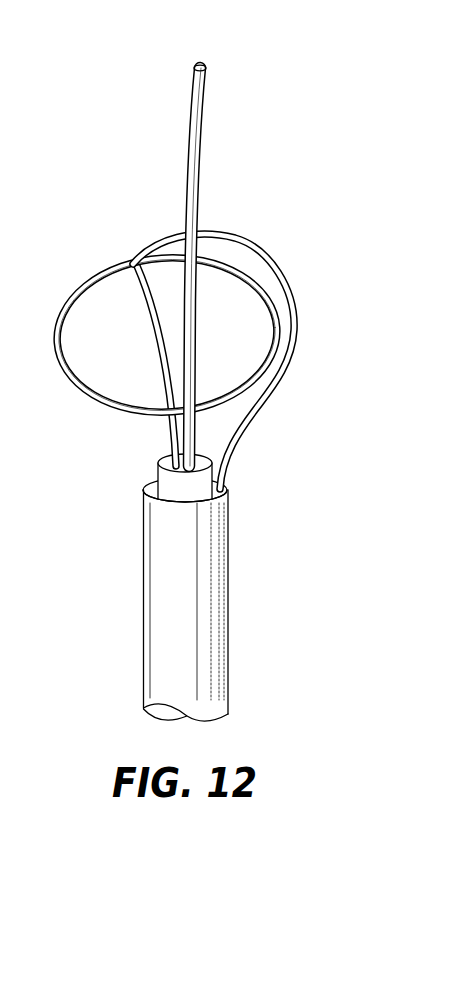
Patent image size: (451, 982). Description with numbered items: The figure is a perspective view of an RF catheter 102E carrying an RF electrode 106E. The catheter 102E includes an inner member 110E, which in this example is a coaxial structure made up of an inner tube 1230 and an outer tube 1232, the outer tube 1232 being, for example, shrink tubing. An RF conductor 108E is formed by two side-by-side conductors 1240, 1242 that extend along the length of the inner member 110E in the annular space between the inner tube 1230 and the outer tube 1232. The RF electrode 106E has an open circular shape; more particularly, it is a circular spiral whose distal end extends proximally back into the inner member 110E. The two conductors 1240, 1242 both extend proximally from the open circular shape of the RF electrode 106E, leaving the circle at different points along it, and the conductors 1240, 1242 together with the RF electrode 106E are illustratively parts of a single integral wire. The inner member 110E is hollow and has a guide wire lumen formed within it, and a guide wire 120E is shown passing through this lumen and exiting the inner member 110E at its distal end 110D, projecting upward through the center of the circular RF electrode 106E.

The RF catheter 102E is at (250, 579).
The RF electrode 106E is at (225, 356).
The RF conductor 108E is at (234, 361).
The distal end 110D is at (232, 468).
The inner member 110E is at (188, 599).
The guide wire 120E is at (193, 156).
The inner tube 1230 is at (158, 477).
The outer tube 1232 is at (146, 552).
The conductor 1240 is at (168, 357).
The conductor 1242 is at (246, 404).